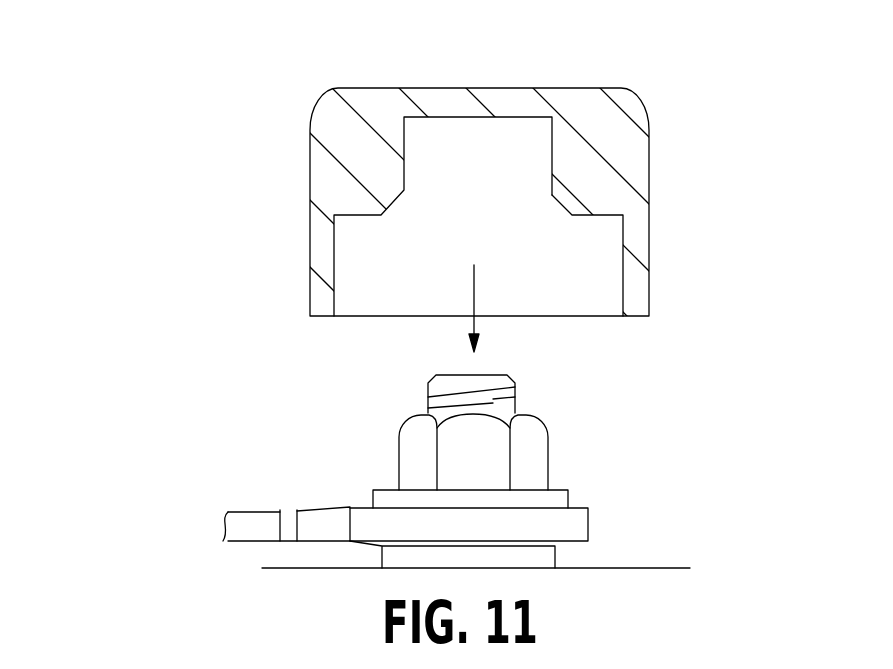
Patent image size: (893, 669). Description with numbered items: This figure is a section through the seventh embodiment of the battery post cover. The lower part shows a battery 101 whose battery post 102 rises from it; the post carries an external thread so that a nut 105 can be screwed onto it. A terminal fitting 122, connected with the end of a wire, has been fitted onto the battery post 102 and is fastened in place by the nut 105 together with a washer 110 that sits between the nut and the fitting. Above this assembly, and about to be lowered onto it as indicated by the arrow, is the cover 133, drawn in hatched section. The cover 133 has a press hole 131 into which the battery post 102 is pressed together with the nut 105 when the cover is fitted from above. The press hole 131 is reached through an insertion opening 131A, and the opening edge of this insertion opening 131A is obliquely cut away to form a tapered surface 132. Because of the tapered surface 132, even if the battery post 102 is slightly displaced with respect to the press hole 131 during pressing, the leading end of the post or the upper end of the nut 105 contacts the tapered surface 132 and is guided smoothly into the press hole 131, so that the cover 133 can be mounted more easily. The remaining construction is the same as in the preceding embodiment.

The cover 133 is at (522, 57).
The press hole 131 is at (535, 138).
The insertion opening 131A is at (552, 188).
The tapered surface 132 is at (562, 208).
The battery post 102 is at (492, 398).
The nut 105 is at (545, 459).
The washer 110 is at (560, 502).
The terminal fitting 122 is at (576, 535).
The battery 101 is at (690, 568).